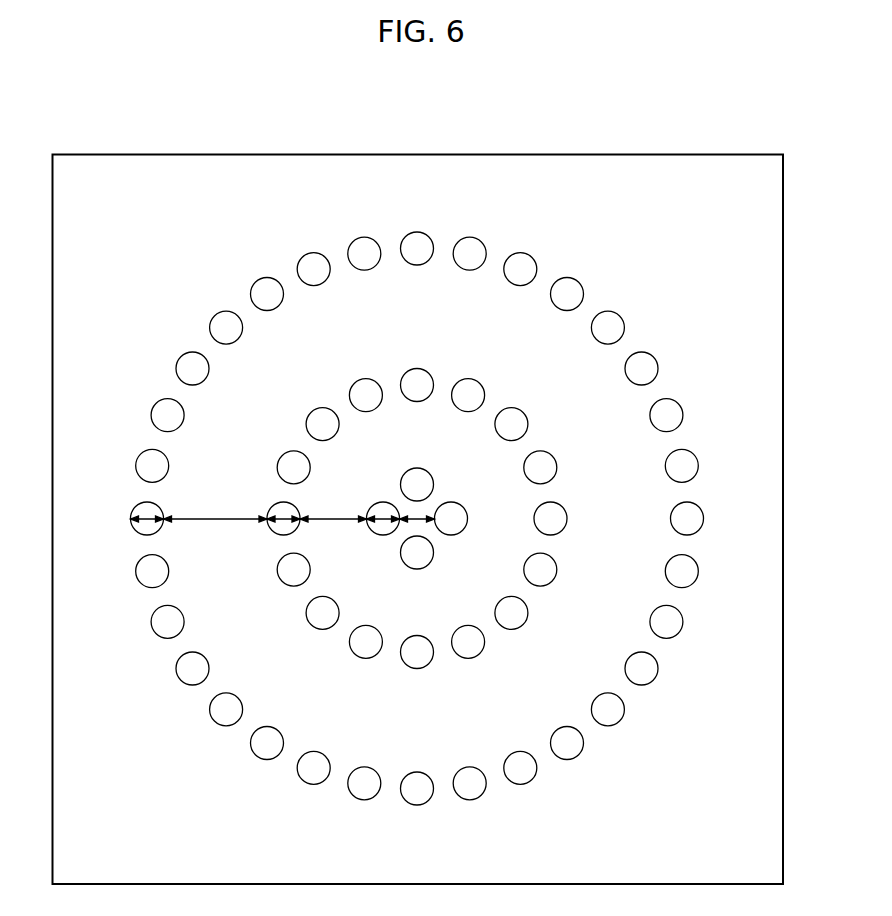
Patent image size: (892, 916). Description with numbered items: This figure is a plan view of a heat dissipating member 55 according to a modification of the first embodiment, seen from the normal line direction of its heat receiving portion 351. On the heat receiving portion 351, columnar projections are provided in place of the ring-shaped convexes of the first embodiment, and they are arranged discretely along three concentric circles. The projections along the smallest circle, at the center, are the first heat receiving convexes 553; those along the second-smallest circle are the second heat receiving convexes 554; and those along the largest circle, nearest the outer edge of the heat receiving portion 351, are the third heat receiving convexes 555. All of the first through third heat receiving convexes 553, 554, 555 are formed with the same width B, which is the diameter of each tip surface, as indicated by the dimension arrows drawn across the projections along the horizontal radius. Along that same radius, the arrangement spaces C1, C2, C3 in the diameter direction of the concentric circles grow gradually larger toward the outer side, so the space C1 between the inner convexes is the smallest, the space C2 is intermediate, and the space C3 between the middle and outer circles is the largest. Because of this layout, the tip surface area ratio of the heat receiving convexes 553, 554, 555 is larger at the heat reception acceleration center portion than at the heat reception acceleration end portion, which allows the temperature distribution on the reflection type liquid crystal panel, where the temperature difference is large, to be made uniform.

The heat dissipating member 55 is at (443, 146).
The heat receiving portion 351 is at (633, 177).
The first heat receiving convexes 553 is at (421, 475).
The second heat receiving convexes 554 is at (516, 419).
The third heat receiving convexes 555 is at (649, 373).
The width B is at (141, 514).
The arrangement space C1 is at (420, 516).
The arrangement space C2 is at (333, 509).
The arrangement space C3 is at (216, 509).